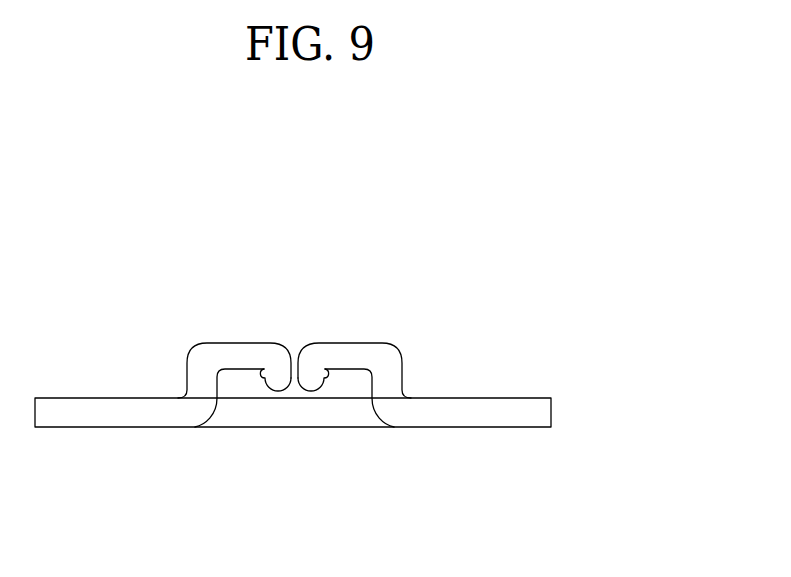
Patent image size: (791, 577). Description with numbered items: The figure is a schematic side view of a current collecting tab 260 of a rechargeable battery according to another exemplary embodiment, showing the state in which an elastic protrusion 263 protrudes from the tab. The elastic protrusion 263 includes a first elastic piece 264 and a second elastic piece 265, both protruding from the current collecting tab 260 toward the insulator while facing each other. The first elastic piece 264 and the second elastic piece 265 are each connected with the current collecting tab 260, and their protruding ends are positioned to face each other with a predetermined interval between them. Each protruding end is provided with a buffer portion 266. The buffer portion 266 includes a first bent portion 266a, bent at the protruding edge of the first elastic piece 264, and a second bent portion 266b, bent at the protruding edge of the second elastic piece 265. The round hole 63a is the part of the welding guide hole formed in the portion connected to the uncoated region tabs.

The current collecting tab 260 is at (293, 367).
The elastic protrusion 263 is at (294, 365).
The first elastic piece 264 is at (234, 386).
The second elastic piece 265 is at (354, 386).
The buffer portion 266 is at (232, 488).
The first bent portion 266a is at (270, 382).
The second bent portion 266b is at (313, 382).
The round hole 63a is at (353, 415).